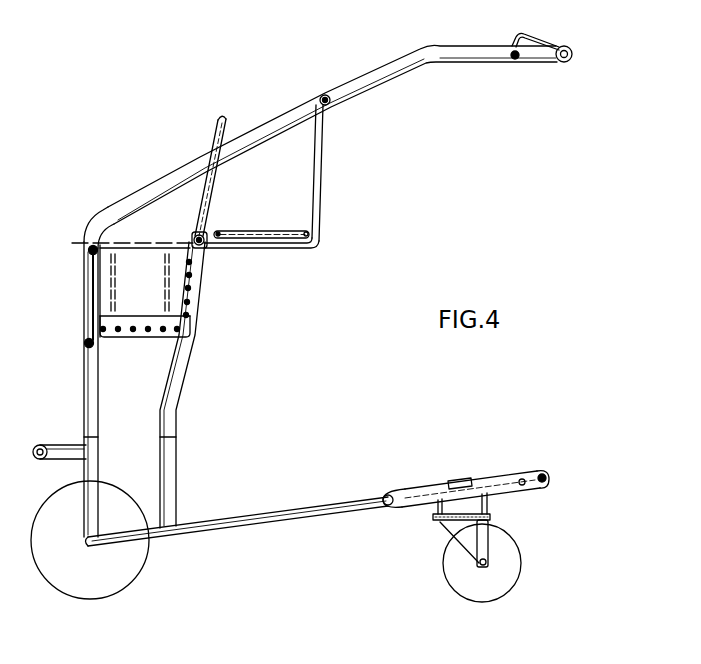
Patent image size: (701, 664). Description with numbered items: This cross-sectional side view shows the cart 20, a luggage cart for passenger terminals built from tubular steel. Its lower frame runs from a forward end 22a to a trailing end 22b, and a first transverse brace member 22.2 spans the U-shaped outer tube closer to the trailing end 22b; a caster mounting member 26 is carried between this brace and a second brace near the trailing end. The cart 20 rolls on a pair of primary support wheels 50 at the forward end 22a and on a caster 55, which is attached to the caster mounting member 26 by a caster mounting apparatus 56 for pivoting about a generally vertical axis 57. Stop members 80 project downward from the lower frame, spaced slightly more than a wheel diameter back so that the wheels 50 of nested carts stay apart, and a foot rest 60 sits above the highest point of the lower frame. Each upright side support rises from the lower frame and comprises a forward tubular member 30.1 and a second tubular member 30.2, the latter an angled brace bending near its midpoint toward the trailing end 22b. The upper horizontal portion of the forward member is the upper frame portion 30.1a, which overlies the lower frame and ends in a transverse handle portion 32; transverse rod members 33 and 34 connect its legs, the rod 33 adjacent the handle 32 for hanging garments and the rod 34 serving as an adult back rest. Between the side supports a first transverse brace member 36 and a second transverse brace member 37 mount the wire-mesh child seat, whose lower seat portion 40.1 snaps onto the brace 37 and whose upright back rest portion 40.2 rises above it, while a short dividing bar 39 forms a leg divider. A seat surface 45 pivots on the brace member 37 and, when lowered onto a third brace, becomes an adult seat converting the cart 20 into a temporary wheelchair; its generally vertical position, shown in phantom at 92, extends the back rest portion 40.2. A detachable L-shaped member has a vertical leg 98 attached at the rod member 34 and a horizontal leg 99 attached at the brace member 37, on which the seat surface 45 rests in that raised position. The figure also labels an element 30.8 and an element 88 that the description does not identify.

The cart 20 is at (355, 244).
The forward tubular member 30.1 is at (87, 392).
The frame corner hinge 30.8 is at (89, 245).
The upper frame portion 30.1a is at (393, 62).
The handle portion 32 is at (569, 52).
The latch bracket 88 is at (528, 45).
The transverse rod member 33 is at (513, 59).
The transverse rod member 34 is at (325, 95).
The vertical leg 98 is at (323, 165).
The horizontal leg 99 is at (284, 246).
The seat surface 45 is at (277, 231).
The vertical seat position 92 is at (220, 130).
The second transverse brace member 37 is at (207, 224).
The dividing bar 39 is at (91, 290).
The upright back rest portion 40.2 is at (186, 275).
The lower seat portion 40.1 is at (136, 327).
The first transverse brace member 36 is at (84, 342).
The second tubular member 30.2 is at (181, 386).
The foot rest 60 is at (58, 457).
The primary support wheels 50 is at (70, 593).
The stop members 80 is at (216, 543).
The forward end 22a is at (87, 541).
The first transverse brace member 22.2 is at (388, 493).
The caster mounting member 26 is at (428, 490).
The trailing end 22b is at (546, 478).
The vertical axis 57 is at (491, 503).
The caster mounting apparatus 56 is at (438, 530).
The caster 55 is at (455, 570).